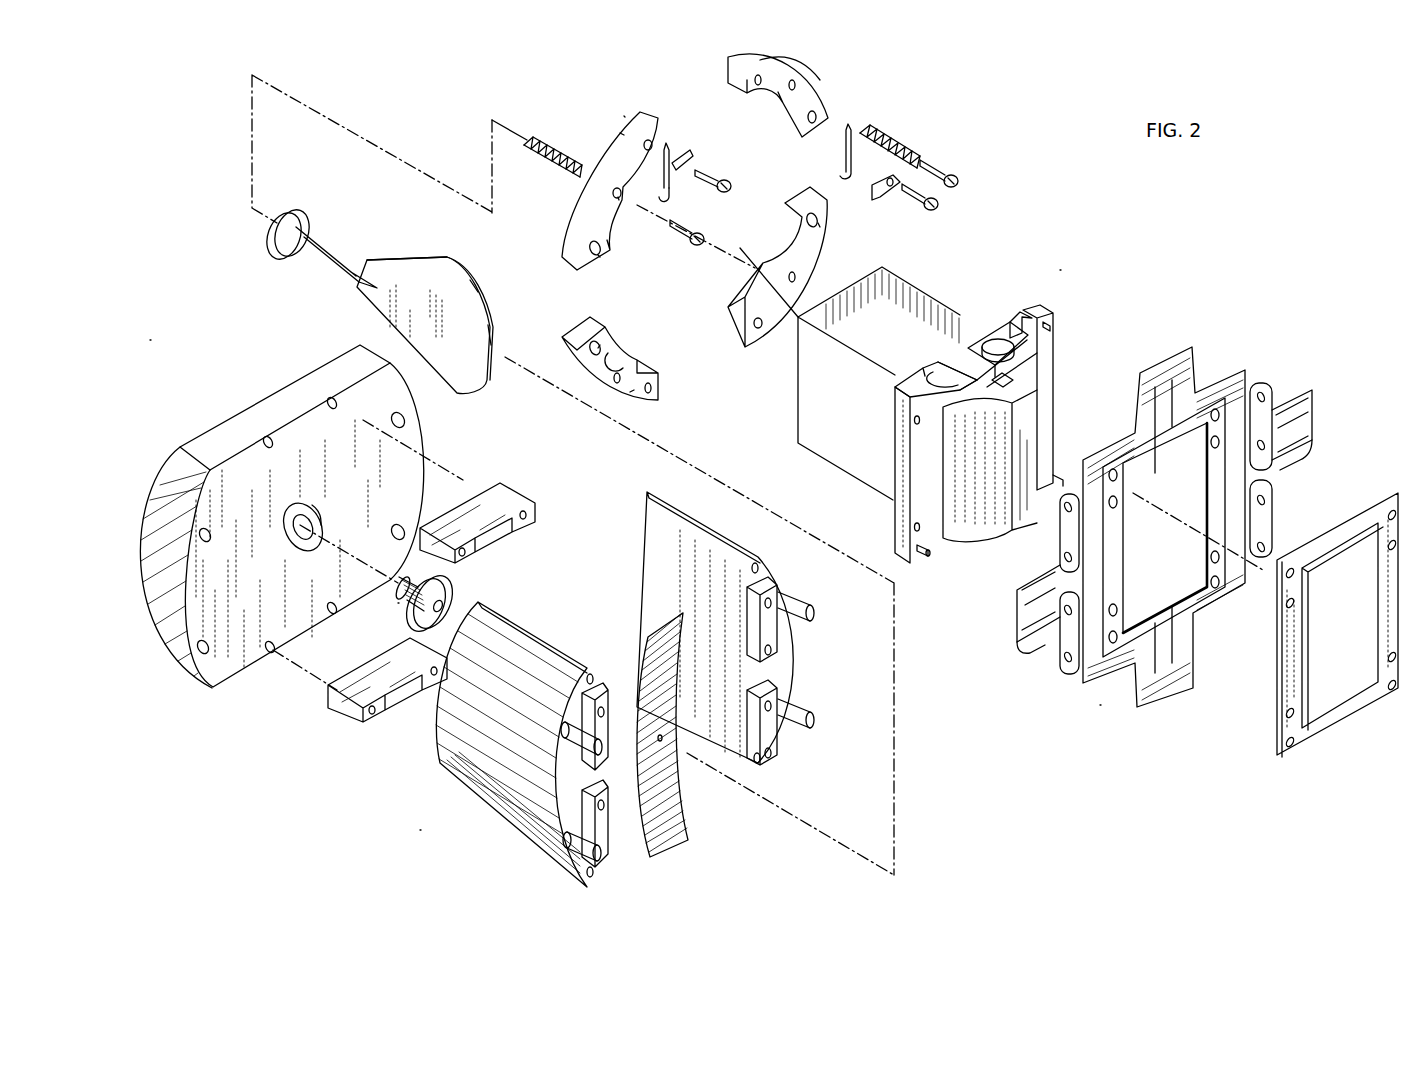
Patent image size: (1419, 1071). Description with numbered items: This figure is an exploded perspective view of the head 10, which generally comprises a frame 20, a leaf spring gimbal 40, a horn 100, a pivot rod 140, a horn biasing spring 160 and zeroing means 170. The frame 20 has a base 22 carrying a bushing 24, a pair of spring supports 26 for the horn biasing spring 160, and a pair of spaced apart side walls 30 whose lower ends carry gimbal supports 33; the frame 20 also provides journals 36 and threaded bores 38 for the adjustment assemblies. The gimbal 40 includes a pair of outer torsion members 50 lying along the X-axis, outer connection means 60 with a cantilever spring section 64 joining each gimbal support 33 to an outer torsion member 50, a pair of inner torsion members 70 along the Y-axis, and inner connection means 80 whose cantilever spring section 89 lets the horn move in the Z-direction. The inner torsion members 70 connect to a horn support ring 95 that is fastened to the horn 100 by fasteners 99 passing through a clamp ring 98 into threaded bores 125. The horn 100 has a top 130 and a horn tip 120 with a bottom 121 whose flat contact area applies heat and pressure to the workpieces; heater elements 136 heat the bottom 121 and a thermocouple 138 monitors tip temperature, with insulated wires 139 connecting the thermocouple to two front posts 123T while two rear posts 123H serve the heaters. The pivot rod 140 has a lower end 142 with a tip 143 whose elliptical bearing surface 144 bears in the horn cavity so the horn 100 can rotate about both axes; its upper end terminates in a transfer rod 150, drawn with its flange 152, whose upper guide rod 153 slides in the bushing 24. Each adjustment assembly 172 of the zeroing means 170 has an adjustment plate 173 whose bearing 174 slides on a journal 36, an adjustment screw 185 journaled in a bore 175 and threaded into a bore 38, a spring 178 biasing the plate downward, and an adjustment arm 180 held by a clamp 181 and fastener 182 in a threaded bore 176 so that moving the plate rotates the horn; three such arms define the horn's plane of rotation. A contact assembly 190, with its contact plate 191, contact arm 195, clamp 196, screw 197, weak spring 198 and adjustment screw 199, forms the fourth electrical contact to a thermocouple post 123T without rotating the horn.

The head 10 is at (275, 351).
The frame 20 is at (425, 822).
The base 22 is at (270, 402).
The bushing 24 is at (318, 516).
The spring supports 26 is at (490, 490).
The side walls 30 is at (645, 545).
The gimbal support 33 is at (755, 615).
The journal 36 is at (565, 735).
The threaded bore 38 is at (748, 572).
The leaf spring gimbal 40 is at (1098, 710).
The outer torsion members 50 is at (1058, 570).
The outer connection means 60 is at (1030, 585).
The cantilever spring section 64 is at (1038, 645).
The inner torsion members 70 is at (1200, 390).
The inner connection means 80 is at (1168, 360).
The cantilever spring section 89 is at (1205, 395).
The horn support ring 95 is at (1115, 580).
The clamp ring 98 is at (1284, 690).
The fasteners 99 is at (1290, 605).
The horn 100 is at (1060, 271).
The horn tip 120 is at (1057, 390).
The bottom 121 is at (1030, 412).
The front posts 123T is at (1052, 325).
The rear posts 123H is at (1057, 480).
The threaded bores 125 is at (905, 432).
The top 130 is at (909, 271).
The heater elements 136 is at (990, 340).
The thermocouple 138 is at (1012, 316).
The insulated wires 139 is at (1050, 352).
The pivot rod 140 is at (326, 224).
The lower end 142 is at (413, 270).
The tip 143 is at (475, 290).
The bearing surface 144 is at (490, 325).
The transfer rod 150 is at (398, 603).
The flange 152 is at (448, 582).
The upper guide rod 153 is at (405, 613).
The horn biasing spring 160 is at (688, 840).
The zeroing means 170 is at (622, 117).
The adjustment assembly 172 is at (644, 112).
The adjustment plate 173 is at (620, 133).
The bearing 174 is at (600, 255).
The bore 175 is at (619, 200).
The threaded bore 176 is at (655, 150).
The spring 178 is at (555, 145).
The adjustment arm 180 is at (672, 195).
The clamp 181 is at (695, 157).
The fastener 182 is at (730, 180).
The adjustment screw 185 is at (690, 245).
The contact assembly 190 is at (817, 91).
The contact plate 191 is at (800, 62).
The contact arm 195 is at (840, 148).
The clamp 196 is at (880, 198).
The screw 197 is at (920, 212).
The weak spring 198 is at (893, 140).
The adjustment screw 199 is at (945, 170).